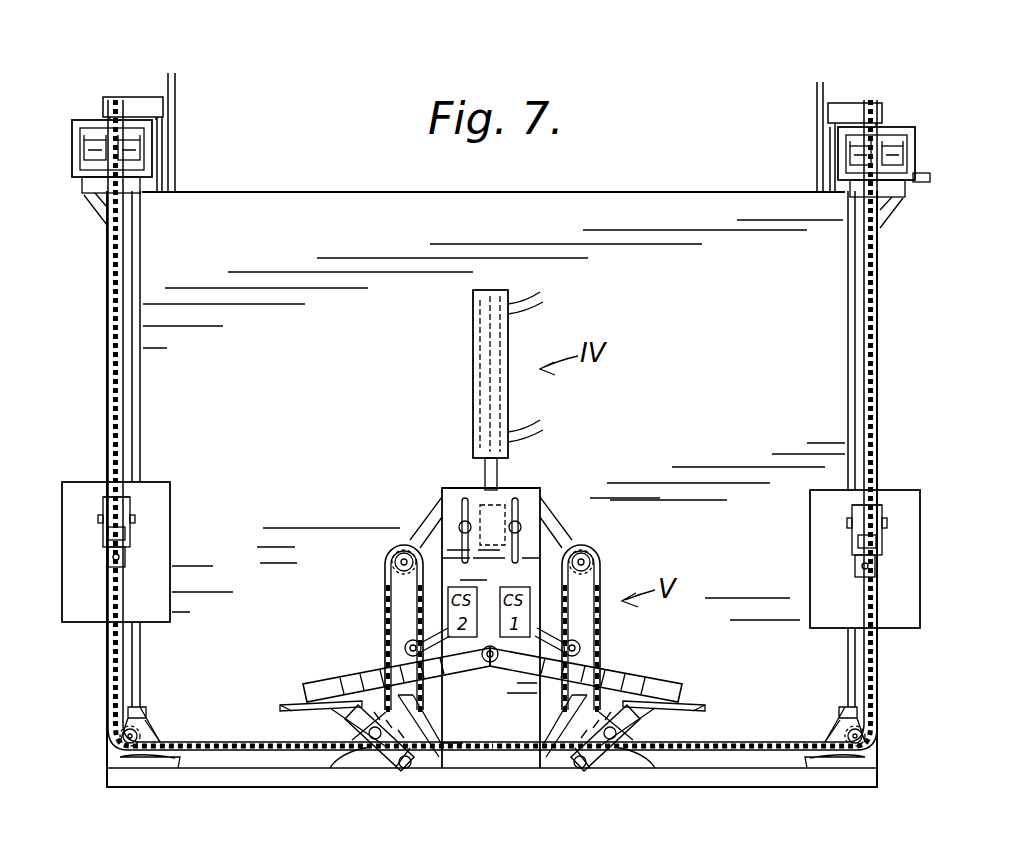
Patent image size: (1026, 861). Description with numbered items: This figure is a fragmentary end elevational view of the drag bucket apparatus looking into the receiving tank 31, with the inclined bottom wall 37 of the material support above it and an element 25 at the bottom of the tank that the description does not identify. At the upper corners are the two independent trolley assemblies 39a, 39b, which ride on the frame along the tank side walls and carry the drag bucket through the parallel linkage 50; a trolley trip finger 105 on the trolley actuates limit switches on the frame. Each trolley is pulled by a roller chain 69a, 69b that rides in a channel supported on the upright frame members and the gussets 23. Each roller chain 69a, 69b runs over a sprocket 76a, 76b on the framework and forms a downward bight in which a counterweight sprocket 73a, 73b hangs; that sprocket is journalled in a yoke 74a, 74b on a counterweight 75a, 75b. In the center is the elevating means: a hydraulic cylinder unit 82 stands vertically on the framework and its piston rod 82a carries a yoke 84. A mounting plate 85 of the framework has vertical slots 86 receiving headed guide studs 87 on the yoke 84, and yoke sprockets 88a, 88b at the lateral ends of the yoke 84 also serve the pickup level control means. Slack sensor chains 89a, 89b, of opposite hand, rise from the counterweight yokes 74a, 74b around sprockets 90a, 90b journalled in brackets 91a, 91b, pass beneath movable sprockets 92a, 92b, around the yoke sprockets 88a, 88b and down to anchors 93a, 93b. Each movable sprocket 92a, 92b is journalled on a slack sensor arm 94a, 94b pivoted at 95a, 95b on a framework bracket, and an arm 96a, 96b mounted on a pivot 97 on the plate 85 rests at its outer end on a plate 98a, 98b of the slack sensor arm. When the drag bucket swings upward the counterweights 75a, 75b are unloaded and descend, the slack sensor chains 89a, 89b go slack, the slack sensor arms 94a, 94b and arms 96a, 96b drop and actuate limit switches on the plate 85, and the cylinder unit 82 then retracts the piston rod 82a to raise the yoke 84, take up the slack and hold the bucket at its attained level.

The gussets 23 is at (100, 222).
The tank bottom 25 is at (862, 786).
The receiving tank 31 is at (617, 178).
The inclined bottom wall 37 is at (278, 210).
The trolley assembly 39a is at (918, 116).
The trolley assembly 39b is at (86, 90).
The parallel linkage 50 is at (197, 124).
The roller chain 69a is at (880, 390).
The roller chain 69b is at (112, 372).
The counterweight sprocket 73a is at (878, 507).
The counterweight sprocket 73b is at (108, 500).
The yoke 74a is at (857, 545).
The yoke 74b is at (128, 530).
The counterweight 75a is at (818, 565).
The counterweight 75b is at (160, 548).
The sprocket 76a is at (866, 146).
The sprocket 76b is at (116, 140).
The hydraulic cylinder unit 82 is at (486, 354).
The piston rod 82a is at (500, 475).
The yoke 84 is at (425, 533).
The mounting plate 85 is at (482, 768).
The vertical slots 86 is at (492, 512).
The headed guide studs 87 is at (462, 527).
The yoke sprocket 88a is at (586, 574).
The yoke sprocket 88b is at (388, 574).
The slack sensor chain 89a is at (872, 650).
The slack sensor chain 89b is at (112, 700).
The sprocket 90a is at (832, 732).
The sprocket 90b is at (150, 728).
The bracket 91a is at (836, 712).
The bracket 91b is at (150, 712).
The movable sprocket 92a is at (632, 768).
The movable sprocket 92b is at (355, 768).
The anchor 93a is at (560, 712).
The anchor 93b is at (449, 726).
The slack sensor arm 94a is at (640, 720).
The slack sensor arm 94b is at (335, 720).
The pivot 95a is at (548, 768).
The pivot 95b is at (432, 768).
The arm 96a is at (630, 680).
The arm 96b is at (341, 682).
The pivot 97 is at (490, 663).
The plate 98a is at (704, 702).
The plate 98b is at (280, 702).
The trolley trip finger 105 is at (928, 182).